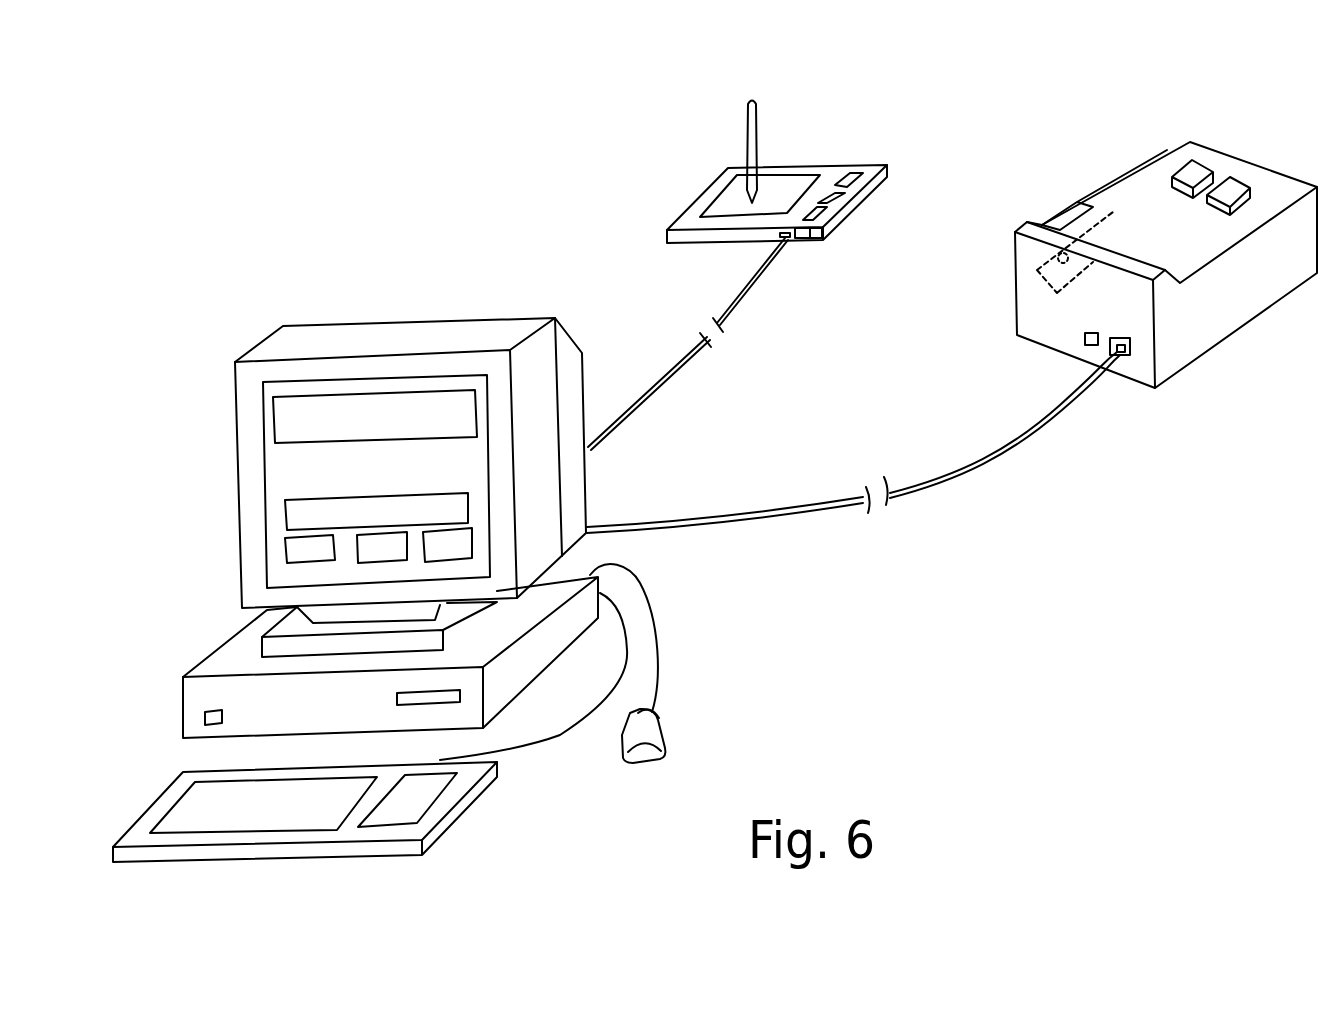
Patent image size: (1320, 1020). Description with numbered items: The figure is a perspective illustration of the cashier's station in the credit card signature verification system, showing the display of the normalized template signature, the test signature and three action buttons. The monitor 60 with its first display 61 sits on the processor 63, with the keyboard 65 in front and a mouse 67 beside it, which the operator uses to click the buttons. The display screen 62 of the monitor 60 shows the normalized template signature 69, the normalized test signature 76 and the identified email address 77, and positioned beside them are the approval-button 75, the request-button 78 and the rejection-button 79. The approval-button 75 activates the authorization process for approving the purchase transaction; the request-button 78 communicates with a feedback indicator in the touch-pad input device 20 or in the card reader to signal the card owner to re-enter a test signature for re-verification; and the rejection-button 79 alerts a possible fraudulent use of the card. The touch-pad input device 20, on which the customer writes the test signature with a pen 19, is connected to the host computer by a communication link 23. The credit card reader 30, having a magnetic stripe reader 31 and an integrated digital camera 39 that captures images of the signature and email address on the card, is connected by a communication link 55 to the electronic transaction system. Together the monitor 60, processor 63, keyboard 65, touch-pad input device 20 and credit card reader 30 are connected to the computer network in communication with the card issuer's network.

The stylus pen 19 is at (747, 117).
The touch-pad input device 20 is at (817, 140).
The communication link 23 is at (753, 290).
The credit card reader 30 is at (1248, 145).
The magnetic stripe reader 31 is at (1067, 218).
The integrated digital camera 39 is at (1040, 283).
The communication link 55 is at (1095, 387).
The monitor 60 is at (488, 335).
The first display 61 is at (340, 378).
The display screen 62 is at (470, 466).
The processor 63 is at (508, 680).
The keyboard 65 is at (443, 827).
The mouse 67 is at (563, 705).
The normalized template signature 69 is at (297, 393).
The approval-button 75 is at (298, 550).
The normalized test signature 76 is at (306, 456).
The identified email address 77 is at (134, 472).
The request-button 78 is at (380, 553).
The rejection-button 79 is at (457, 548).